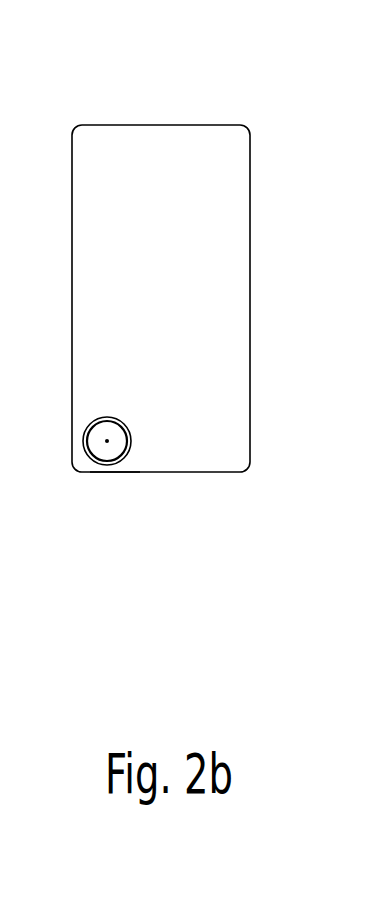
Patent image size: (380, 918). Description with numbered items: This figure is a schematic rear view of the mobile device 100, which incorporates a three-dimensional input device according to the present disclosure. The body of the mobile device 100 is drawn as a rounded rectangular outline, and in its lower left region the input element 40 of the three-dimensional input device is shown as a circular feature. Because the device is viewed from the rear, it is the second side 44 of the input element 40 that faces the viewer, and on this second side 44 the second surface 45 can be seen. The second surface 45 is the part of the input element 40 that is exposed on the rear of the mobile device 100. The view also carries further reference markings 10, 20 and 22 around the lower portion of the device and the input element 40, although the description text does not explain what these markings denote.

The mobile device 100 is at (291, 149).
The housing bottom edge 10 is at (113, 508).
The front surface 20 is at (167, 448).
The outer ring 22 is at (120, 392).
The input element 40 is at (130, 416).
The second side 44 is at (162, 423).
The second surface 45 is at (102, 438).